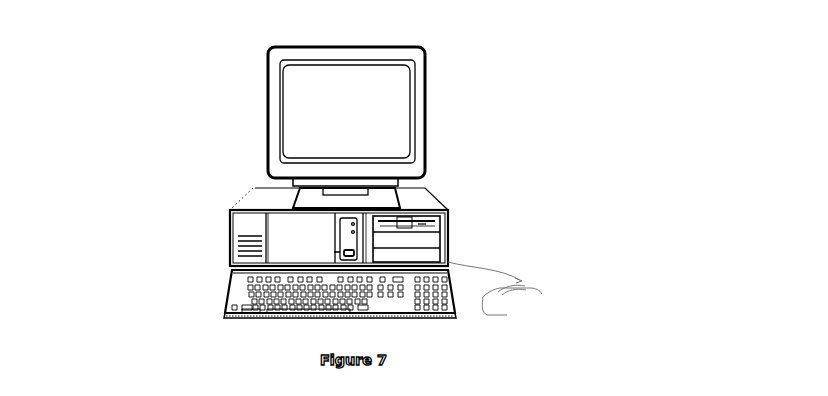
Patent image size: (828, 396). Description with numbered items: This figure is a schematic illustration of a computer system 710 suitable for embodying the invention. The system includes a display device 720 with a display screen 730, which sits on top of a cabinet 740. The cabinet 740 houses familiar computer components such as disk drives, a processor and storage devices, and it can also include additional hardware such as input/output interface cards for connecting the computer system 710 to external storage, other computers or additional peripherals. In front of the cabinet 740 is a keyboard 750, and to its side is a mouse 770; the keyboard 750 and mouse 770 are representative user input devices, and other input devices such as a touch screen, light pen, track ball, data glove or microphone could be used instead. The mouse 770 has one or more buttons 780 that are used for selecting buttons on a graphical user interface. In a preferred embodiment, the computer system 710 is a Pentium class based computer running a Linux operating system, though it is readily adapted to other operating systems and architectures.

The computer system 710 is at (355, 13).
The display device 720 is at (425, 50).
The display screen 730 is at (415, 84).
The cabinet 740 is at (431, 194).
The keyboard 750 is at (228, 285).
The mouse 770 is at (515, 303).
The buttons 780 is at (525, 295).